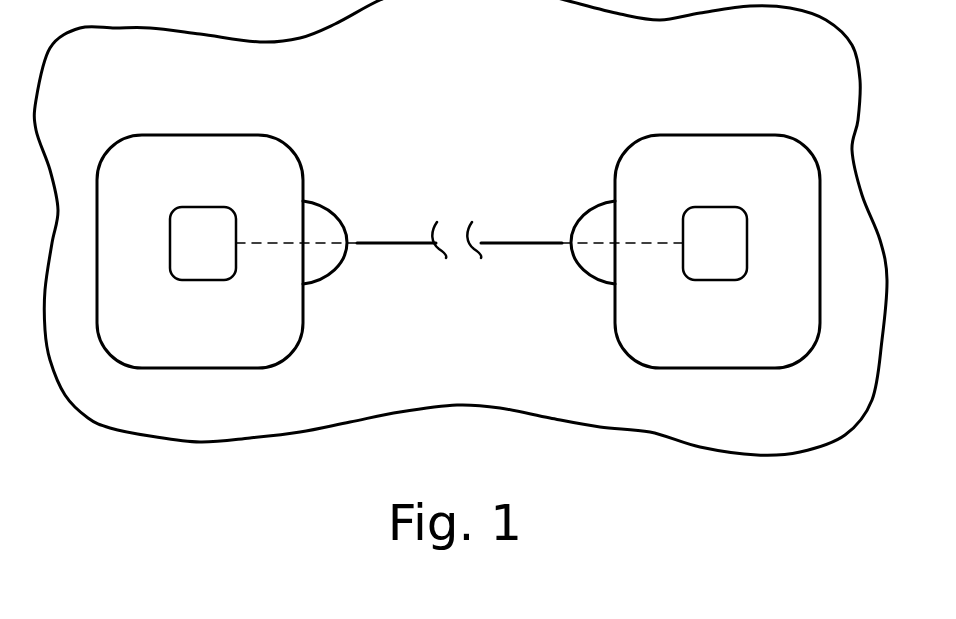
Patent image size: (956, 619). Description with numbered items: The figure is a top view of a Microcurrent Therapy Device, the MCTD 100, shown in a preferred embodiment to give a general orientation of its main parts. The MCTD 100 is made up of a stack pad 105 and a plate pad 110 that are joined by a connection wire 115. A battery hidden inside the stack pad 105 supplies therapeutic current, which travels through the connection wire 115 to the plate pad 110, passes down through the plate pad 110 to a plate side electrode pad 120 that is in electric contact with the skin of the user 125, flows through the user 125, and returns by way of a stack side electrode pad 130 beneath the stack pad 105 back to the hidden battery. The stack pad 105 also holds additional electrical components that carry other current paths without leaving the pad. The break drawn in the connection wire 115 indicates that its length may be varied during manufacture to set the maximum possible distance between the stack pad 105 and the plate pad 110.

The MCTD 100 is at (96, 121).
The stack pad 105 is at (696, 184).
The plate pad 110 is at (183, 184).
The connection wire 115 is at (382, 242).
The plate side electrode pad 120 is at (263, 243).
The user 125 is at (436, 331).
The stack side electrode pad 130 is at (654, 243).